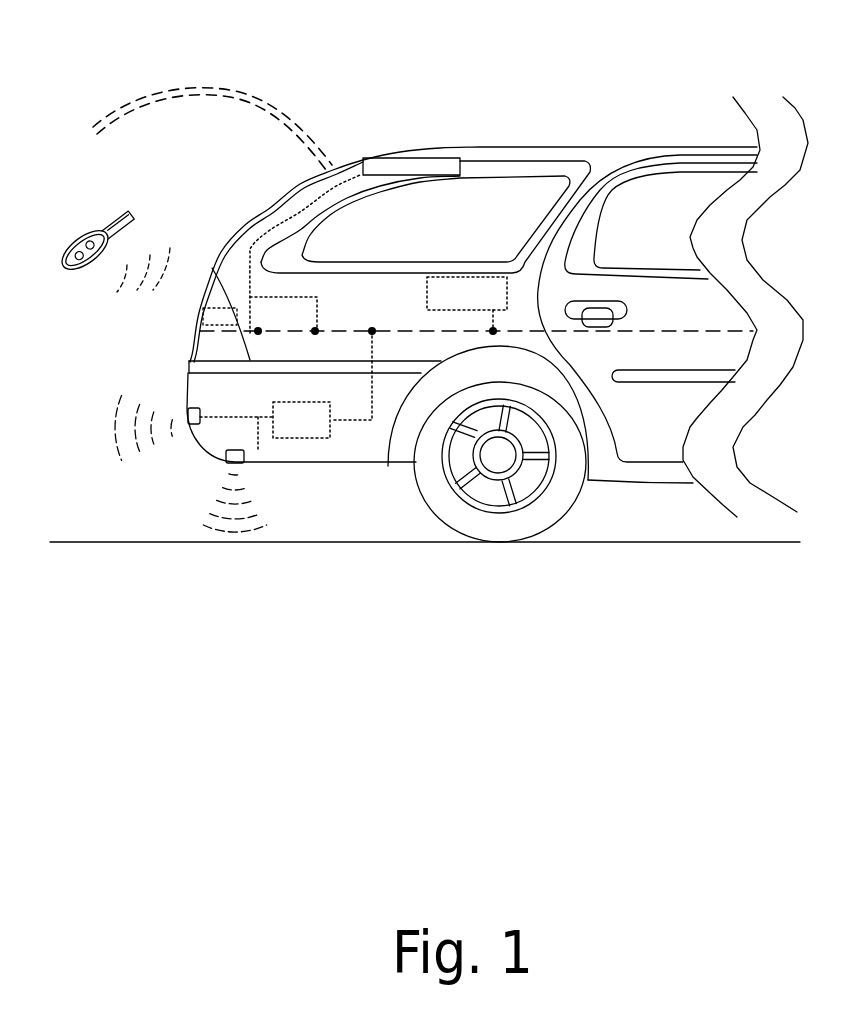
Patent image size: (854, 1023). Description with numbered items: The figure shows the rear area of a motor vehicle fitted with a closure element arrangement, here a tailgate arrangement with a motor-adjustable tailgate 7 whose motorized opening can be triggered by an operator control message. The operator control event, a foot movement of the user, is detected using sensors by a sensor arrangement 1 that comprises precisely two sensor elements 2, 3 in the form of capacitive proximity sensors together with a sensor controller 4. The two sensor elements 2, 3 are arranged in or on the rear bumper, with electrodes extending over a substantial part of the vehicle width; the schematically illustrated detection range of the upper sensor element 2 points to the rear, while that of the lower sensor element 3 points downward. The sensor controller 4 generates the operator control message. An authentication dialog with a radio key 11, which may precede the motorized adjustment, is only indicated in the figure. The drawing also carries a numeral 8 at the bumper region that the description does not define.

The sensor arrangement 1 is at (106, 480).
The upper sensor element 2 is at (190, 413).
The lower sensor element 3 is at (243, 459).
The sensor controller 4 is at (317, 420).
The tailgate 7 is at (265, 100).
The rear bumper 8 is at (213, 440).
The radio key 11 is at (77, 247).